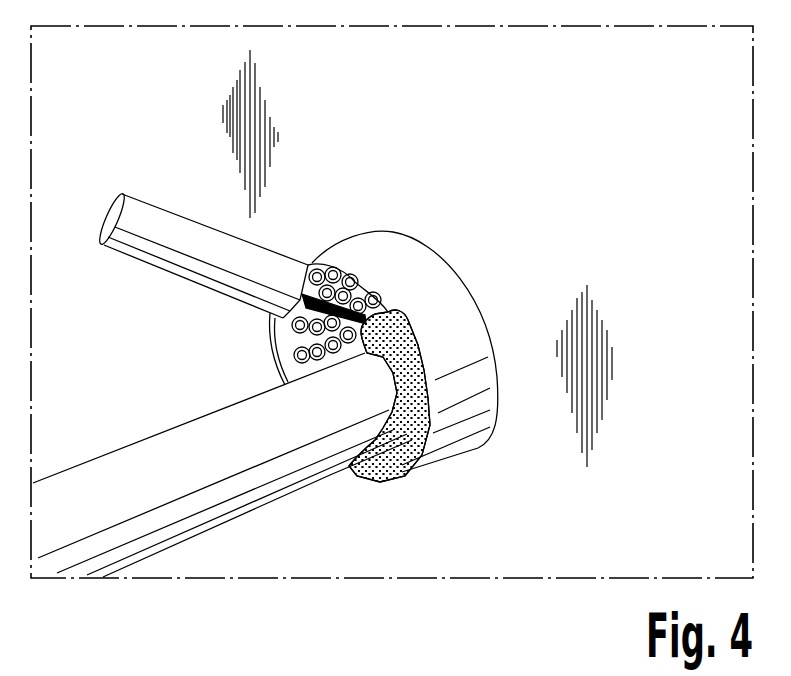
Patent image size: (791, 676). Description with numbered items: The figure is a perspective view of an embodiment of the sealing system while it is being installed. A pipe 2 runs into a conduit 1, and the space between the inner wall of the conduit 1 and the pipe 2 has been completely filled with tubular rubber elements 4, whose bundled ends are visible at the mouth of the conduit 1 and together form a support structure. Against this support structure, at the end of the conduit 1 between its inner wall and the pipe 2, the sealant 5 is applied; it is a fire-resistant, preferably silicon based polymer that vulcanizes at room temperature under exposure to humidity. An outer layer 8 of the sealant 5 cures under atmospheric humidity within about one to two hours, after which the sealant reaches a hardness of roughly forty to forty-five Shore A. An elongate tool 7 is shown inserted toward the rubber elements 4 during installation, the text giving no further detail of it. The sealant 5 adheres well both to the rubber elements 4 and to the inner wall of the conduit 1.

The conduit 1 is at (385, 243).
The pipe 2 is at (130, 467).
The rubber elements 4 is at (325, 267).
The sealant 5 is at (401, 474).
The rod 7 is at (163, 229).
The outer layer 8 is at (392, 357).